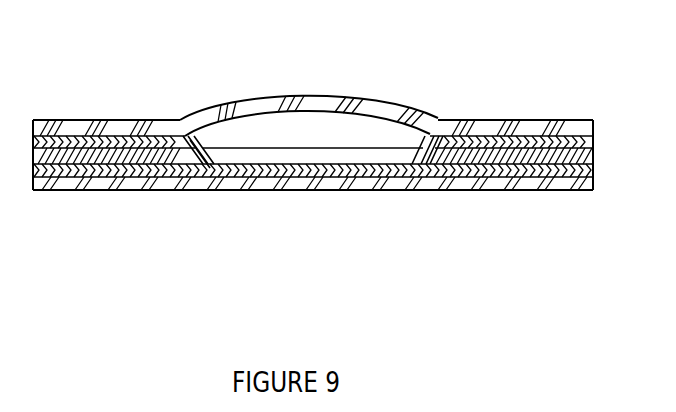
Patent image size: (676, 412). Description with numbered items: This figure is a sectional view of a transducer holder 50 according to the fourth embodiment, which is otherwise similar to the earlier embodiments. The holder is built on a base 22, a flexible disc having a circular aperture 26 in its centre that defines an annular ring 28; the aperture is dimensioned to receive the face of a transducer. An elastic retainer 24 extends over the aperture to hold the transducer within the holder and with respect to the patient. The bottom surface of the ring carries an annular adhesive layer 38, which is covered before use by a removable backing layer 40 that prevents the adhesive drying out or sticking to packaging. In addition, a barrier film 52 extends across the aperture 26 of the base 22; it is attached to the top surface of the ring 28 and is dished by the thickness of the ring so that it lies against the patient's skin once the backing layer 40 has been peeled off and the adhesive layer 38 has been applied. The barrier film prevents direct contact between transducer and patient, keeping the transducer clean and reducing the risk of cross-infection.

The transducer holder 50 is at (133, 86).
The base 22 is at (578, 156).
The elastic retainer 24 is at (258, 98).
The circular aperture 26 is at (370, 155).
The annular ring 28 is at (523, 153).
The adhesive layer 38 is at (537, 168).
The removable backing layer 40 is at (475, 180).
The barrier film 52 is at (235, 170).